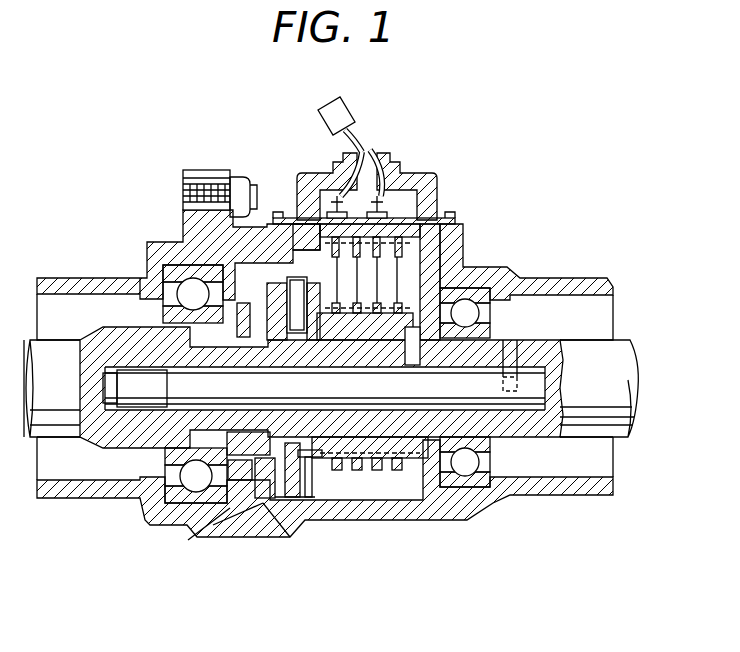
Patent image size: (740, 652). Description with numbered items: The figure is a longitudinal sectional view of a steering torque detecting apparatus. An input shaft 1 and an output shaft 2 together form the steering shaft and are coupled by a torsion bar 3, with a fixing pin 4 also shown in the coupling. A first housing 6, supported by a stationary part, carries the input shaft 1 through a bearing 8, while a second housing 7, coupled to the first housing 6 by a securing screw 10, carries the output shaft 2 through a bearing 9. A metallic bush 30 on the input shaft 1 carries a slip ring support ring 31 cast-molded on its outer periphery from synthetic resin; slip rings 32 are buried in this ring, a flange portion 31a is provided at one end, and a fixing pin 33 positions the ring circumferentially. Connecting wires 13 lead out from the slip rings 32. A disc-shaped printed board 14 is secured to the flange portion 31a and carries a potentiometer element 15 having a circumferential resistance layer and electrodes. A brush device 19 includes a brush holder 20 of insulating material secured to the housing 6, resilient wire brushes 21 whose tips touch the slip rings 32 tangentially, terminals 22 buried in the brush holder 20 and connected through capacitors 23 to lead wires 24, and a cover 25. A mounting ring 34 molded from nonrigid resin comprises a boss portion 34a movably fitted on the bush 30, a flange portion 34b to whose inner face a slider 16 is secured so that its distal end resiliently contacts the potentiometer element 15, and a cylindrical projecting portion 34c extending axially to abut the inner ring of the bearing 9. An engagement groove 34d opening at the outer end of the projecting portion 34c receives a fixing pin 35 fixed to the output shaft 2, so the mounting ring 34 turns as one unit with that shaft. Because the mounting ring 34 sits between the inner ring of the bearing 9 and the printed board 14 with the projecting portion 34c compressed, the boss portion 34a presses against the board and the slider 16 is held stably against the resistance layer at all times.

The input shaft 1 is at (626, 340).
The output shaft 2 is at (35, 337).
The torsion bar 3 is at (490, 420).
The fixing pin 4 is at (510, 340).
The first housing 6 is at (578, 278).
The second housing 7 is at (120, 278).
The bearing 8 is at (477, 482).
The bearing 9 is at (160, 518).
The securing screw 10 is at (225, 178).
The connecting wires 13 is at (312, 490).
The printed board 14 is at (305, 492).
The potentiometer element 15 is at (300, 493).
The slider 16 is at (291, 497).
The brush device 19 is at (517, 254).
The brush holder 20 is at (395, 270).
The brushes 21 is at (400, 305).
The terminals 22 is at (395, 290).
The capacitors 23 is at (340, 268).
The lead wires 24 is at (373, 137).
The cover 25 is at (298, 172).
The bush 30 is at (424, 480).
The slip ring support ring 31 is at (388, 476).
The flange portion 31a is at (390, 219).
The slip rings 32 is at (360, 483).
The fixing pin 33 is at (413, 327).
The mounting ring 34 is at (287, 586).
The boss portion 34a is at (247, 510).
The flange portion 34b is at (290, 497).
The cylindrical projecting portion 34c is at (215, 510).
The engagement groove 34d is at (248, 318).
The fixing pin 35 is at (180, 246).